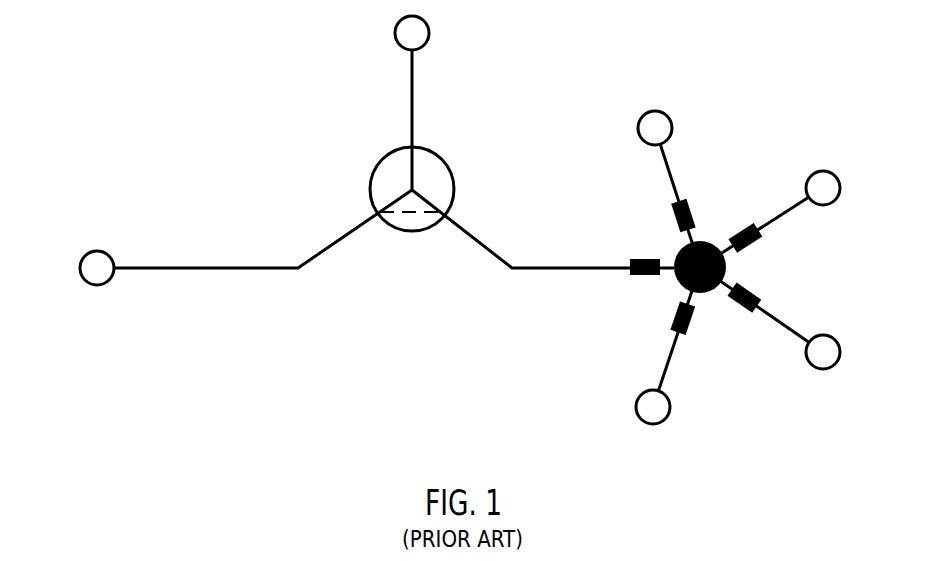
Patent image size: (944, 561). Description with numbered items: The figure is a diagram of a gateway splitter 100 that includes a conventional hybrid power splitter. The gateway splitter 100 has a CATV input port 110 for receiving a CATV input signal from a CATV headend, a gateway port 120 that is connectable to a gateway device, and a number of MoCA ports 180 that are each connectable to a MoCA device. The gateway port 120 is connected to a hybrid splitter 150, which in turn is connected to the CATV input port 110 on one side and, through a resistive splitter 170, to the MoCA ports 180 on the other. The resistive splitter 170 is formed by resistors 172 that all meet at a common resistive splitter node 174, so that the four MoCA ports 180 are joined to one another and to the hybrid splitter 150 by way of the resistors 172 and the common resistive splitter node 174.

The gateway splitter 100 is at (760, 68).
The CATV input port 110 is at (222, 237).
The gateway port 120 is at (387, 103).
The hybrid splitter 150 is at (522, 207).
The resistive splitter 170 is at (724, 194).
The resistors 172 is at (697, 268).
The common resistive splitter node 174 is at (724, 267).
The MoCA ports 180 is at (739, 267).